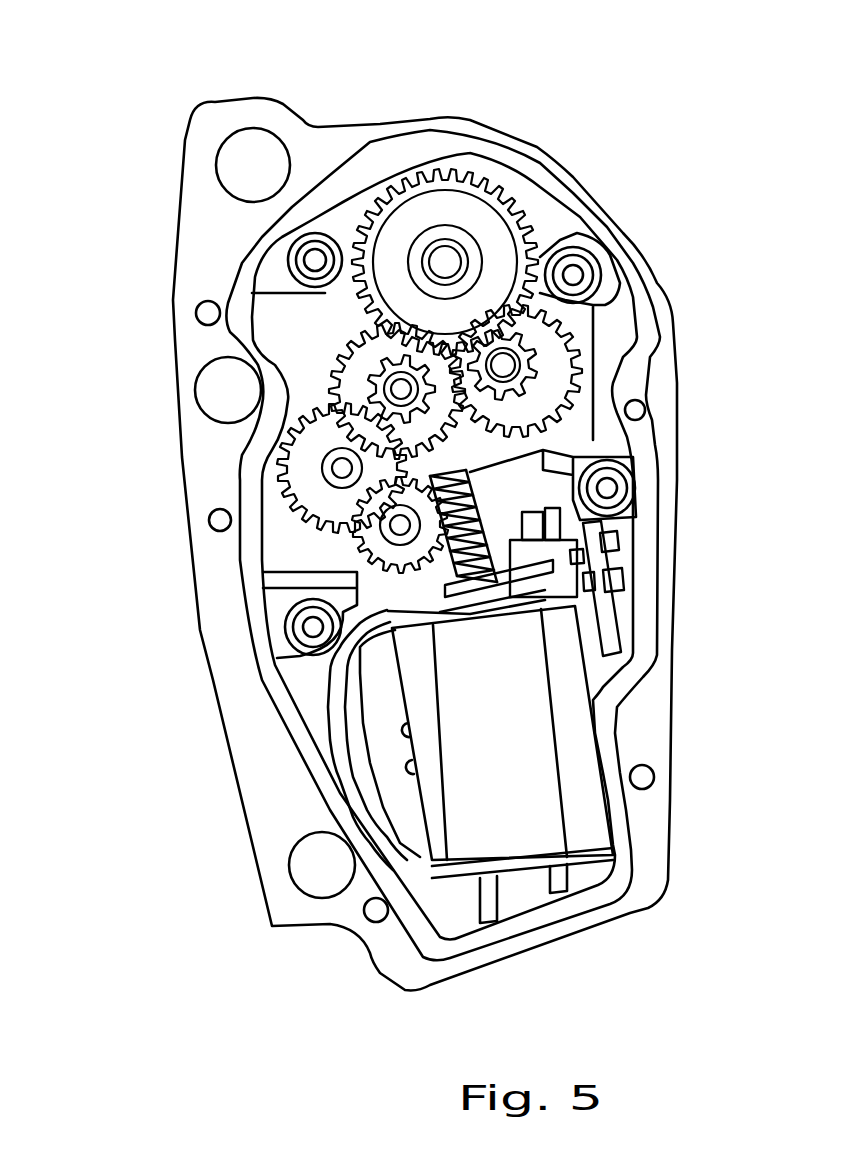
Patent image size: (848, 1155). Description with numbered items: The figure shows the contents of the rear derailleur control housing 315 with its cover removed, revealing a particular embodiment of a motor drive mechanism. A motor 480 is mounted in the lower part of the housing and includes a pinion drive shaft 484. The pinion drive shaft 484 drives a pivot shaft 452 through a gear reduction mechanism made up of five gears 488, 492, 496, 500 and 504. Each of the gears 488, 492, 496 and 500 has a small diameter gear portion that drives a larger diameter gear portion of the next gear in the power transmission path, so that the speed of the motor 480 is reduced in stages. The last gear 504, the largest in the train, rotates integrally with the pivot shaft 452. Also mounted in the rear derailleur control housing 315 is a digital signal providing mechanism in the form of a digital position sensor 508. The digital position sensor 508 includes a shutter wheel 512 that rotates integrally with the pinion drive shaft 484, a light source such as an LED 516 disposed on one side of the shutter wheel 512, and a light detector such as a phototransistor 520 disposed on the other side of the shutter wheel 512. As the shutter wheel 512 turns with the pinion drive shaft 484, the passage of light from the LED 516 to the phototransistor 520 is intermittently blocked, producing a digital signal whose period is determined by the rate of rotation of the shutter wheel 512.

The rear derailleur control housing 315 is at (180, 455).
The pivot shaft 452 is at (464, 257).
The motor 480 is at (530, 752).
The pinion drive shaft 484 is at (478, 488).
The gear 488 is at (355, 535).
The gear 492 is at (312, 482).
The gear 496 is at (360, 352).
The gear 500 is at (540, 345).
The gear 504 is at (437, 205).
The digital position sensor 508 is at (519, 631).
The shutter wheel 512 is at (553, 568).
The LED 516 is at (553, 548).
The phototransistor 520 is at (578, 645).